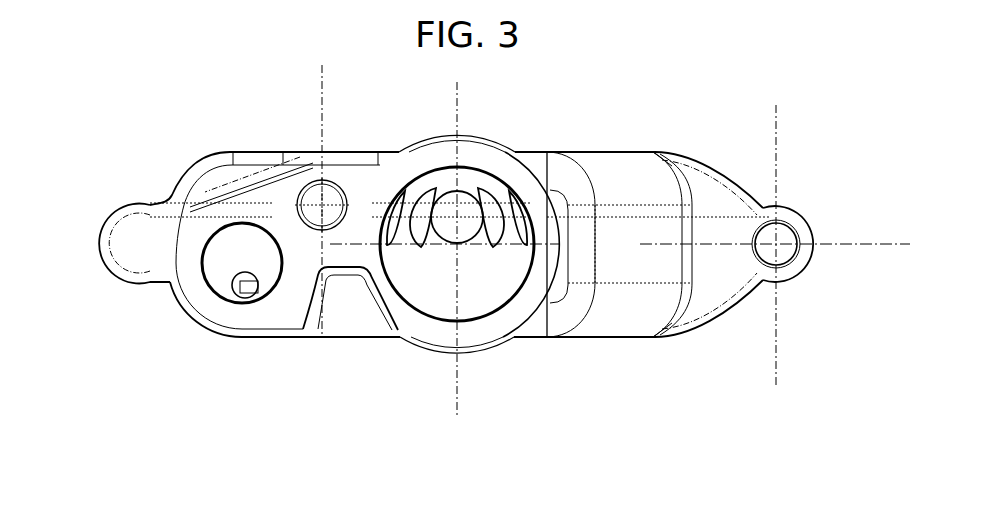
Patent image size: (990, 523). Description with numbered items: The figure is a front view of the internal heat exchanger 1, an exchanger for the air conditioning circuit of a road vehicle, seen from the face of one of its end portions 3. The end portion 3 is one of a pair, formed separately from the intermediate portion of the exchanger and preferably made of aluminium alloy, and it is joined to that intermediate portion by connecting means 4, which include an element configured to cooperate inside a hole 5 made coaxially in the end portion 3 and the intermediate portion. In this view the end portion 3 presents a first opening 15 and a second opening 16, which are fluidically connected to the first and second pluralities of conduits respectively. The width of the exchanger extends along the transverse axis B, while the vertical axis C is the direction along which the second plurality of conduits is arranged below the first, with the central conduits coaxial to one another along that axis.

The internal heat exchanger 1 is at (637, 122).
The end portion 3 is at (612, 335).
The connecting means 4 is at (817, 257).
The hole 5 is at (785, 256).
The first opening 15 is at (483, 167).
The second opening 16 is at (213, 295).
The transverse axis B is at (870, 243).
The vertical axis C is at (458, 380).